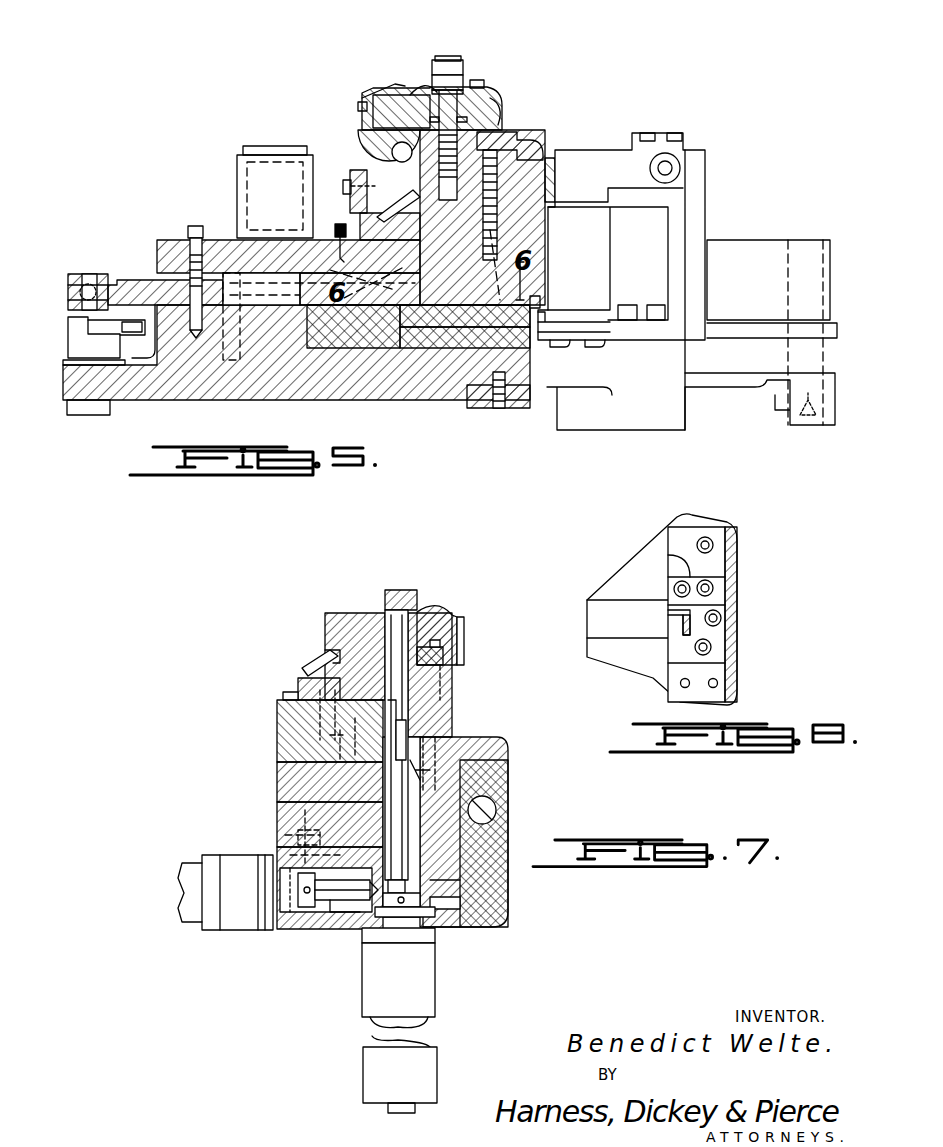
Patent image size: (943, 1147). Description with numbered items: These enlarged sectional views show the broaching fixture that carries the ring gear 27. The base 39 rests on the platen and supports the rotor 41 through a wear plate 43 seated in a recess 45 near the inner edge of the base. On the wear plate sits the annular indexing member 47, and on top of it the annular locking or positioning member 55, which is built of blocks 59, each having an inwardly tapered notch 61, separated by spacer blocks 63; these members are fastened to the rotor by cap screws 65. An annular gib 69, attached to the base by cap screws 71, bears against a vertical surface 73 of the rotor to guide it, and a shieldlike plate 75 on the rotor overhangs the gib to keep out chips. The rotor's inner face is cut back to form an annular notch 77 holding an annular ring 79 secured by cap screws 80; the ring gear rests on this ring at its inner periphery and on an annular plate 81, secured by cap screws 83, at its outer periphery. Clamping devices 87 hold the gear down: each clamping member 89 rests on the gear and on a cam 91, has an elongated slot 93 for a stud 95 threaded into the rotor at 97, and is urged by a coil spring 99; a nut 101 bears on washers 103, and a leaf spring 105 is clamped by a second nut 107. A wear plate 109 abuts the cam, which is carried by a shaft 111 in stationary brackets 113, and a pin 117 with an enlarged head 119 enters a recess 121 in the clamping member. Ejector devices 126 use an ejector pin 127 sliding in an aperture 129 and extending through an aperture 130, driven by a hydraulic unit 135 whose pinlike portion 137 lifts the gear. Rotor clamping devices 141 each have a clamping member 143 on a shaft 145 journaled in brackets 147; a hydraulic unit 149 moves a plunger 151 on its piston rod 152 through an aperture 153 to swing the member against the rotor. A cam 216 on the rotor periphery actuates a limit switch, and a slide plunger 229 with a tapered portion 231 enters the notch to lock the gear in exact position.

In FIG. 5, the ring gear 27 is at (550, 170).
In FIG. 7, the ring gear 27 is at (461, 617).
In FIG. 5, the base 39 is at (268, 405).
In FIG. 7, the base 39 is at (290, 802).
In FIG. 5, the rotor 41 is at (560, 202).
In FIG. 7, the rotor 41 is at (325, 627).
In FIG. 5, the wear plate 43 is at (437, 340).
In FIG. 7, the wear plate 43 is at (325, 790).
In FIG. 5, the notch or recess 45 is at (420, 348).
In FIG. 7, the notch or recess 45 is at (305, 823).
In FIG. 5, the annular indexing member 47 is at (452, 360).
In FIG. 7, the annular indexing member 47 is at (337, 768).
In FIG. 5, the annular locking or positioning member 55 is at (382, 350).
In FIG. 7, the annular locking or positioning member 55 is at (337, 747).
In FIG. 6, the annular locking or positioning member 55 is at (727, 603).
In FIG. 6, the blocks 59 is at (720, 650).
In FIG. 6, the tapered notch or opening 61 is at (728, 623).
In FIG. 6, the spacer blocks 63 is at (720, 689).
In FIG. 5, the cap screws 65 is at (525, 303).
In FIG. 7, the cap screws 65 is at (430, 706).
In FIG. 5, the annular gib 69 is at (395, 236).
In FIG. 7, the annular gib 69 is at (300, 685).
In FIG. 7, the cap screws 71 is at (297, 700).
In FIG. 7, the vertical surface 73 is at (318, 668).
In FIG. 7, the shieldlike plate 75 is at (322, 658).
In FIG. 7, the annular notch 77 is at (465, 657).
In FIG. 7, the annular ring or gib 79 is at (455, 650).
In FIG. 7, the cap screws 80 is at (452, 670).
In FIG. 7, the annular plate or gib member 81 is at (432, 602).
In FIG. 5, the cap screws 83 is at (525, 157).
In FIG. 5, the clamping devices 87 is at (490, 88).
In FIG. 5, the clamping member 89 is at (500, 105).
In FIG. 5, the cam member 91 is at (362, 145).
In FIG. 5, the elongated slot 93 is at (482, 95).
In FIG. 5, the stud 95 is at (433, 88).
In FIG. 5, the threaded connection in fixture rotor 97 is at (450, 190).
In FIG. 5, the coil spring 99 is at (488, 112).
In FIG. 5, the nut 101 is at (463, 58).
In FIG. 5, the washers 103 is at (431, 88).
In FIG. 5, the leaf spring 105 is at (400, 90).
In FIG. 5, the second nut 107 is at (448, 57).
In FIG. 5, the wear plate 109 is at (358, 106).
In FIG. 5, the shaft 111 is at (385, 175).
In FIG. 5, the stationary brackets 113 is at (352, 180).
In FIG. 5, the pin 117 is at (380, 216).
In FIG. 5, the enlarged head 119 is at (465, 121).
In FIG. 5, the recess 121 is at (417, 120).
In FIG. 7, the stripper or ejector devices 126 is at (449, 959).
In FIG. 7, the ejector pin 127 is at (414, 714).
In FIG. 7, the aperture 129 is at (414, 728).
In FIG. 7, the aperture 130 is at (392, 610).
In FIG. 7, the hydraulic piston and cylinder unit 135 is at (422, 979).
In FIG. 7, the pinlike portion 137 is at (420, 748).
In FIG. 7, the rotor clamping devices 141 is at (516, 832).
In FIG. 7, the clamping member 143 is at (497, 792).
In FIG. 7, the shaft 145 is at (492, 810).
In FIG. 7, the bracket members 147 is at (497, 912).
In FIG. 7, the hydraulic piston and cylinder unit 149 is at (245, 930).
In FIG. 7, the plunger 151 is at (330, 907).
In FIG. 7, the piston rod 152 is at (290, 912).
In FIG. 7, the aperture 153 is at (360, 905).
In FIG. 5, the cam 216 is at (350, 203).
In FIG. 6, the slide plunger 229 is at (600, 603).
In FIG. 6, the tapered portion 231 is at (677, 627).